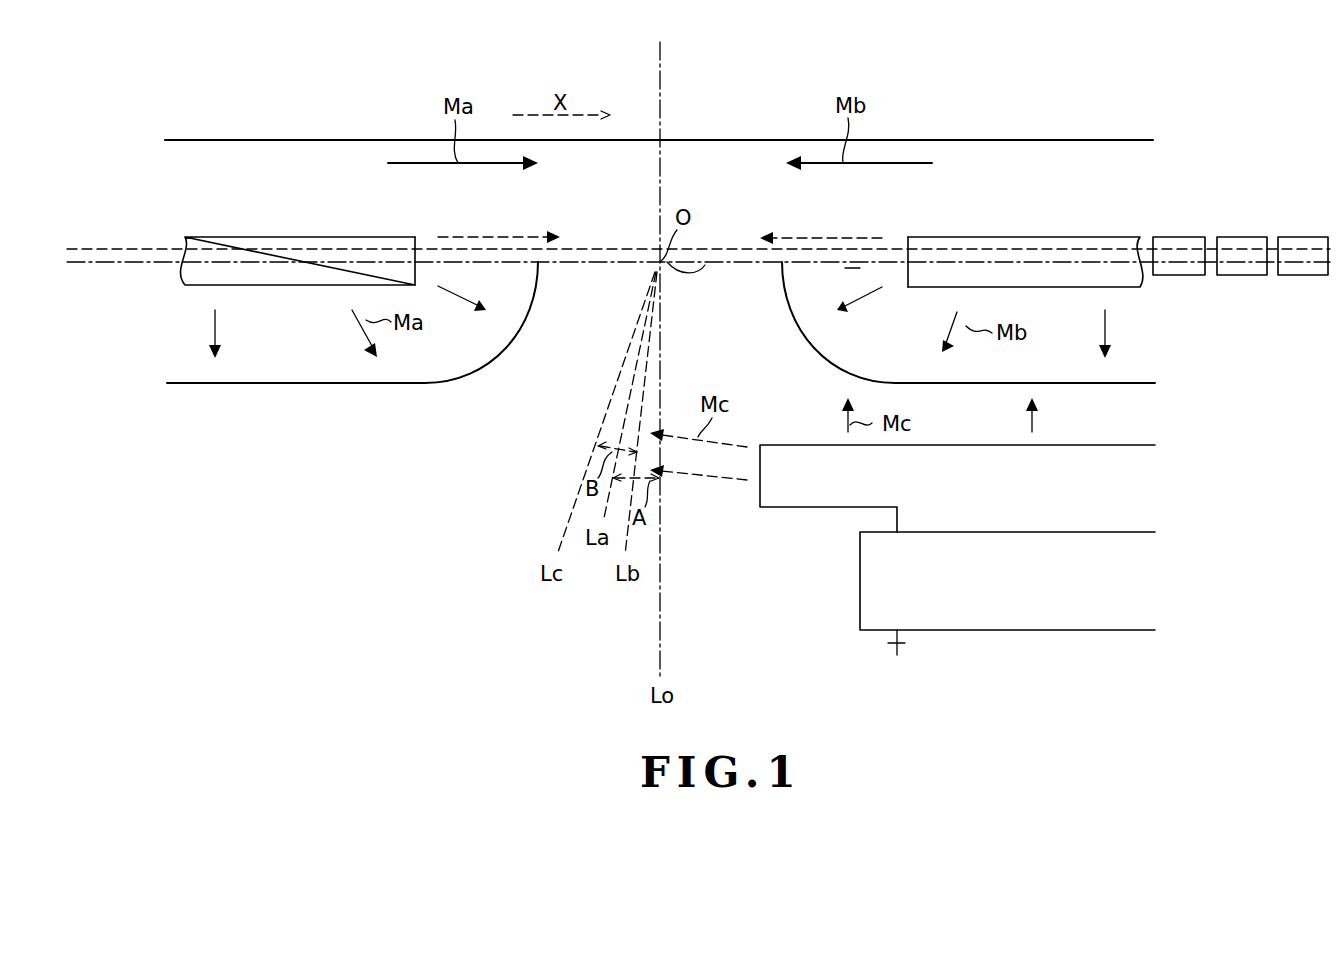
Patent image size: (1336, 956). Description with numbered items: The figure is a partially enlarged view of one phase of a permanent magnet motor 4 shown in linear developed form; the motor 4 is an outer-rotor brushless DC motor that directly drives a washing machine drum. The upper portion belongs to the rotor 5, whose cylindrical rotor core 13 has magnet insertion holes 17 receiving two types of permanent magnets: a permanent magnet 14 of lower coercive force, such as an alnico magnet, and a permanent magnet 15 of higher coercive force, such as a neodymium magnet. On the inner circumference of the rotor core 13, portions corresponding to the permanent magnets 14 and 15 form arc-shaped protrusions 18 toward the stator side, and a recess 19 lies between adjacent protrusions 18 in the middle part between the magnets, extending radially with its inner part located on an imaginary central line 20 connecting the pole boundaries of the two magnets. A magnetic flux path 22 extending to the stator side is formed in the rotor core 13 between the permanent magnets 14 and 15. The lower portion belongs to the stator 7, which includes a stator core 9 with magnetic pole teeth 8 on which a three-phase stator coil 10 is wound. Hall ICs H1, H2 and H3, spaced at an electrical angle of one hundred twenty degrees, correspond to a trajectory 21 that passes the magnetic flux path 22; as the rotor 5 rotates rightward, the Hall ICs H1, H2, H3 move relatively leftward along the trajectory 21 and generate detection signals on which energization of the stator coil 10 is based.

The permanent magnet motor 4 is at (1072, 90).
The rotor 5 is at (1137, 176).
The stator 7 is at (1180, 534).
The magnetic pole teeth 8 is at (760, 495).
The stator core 9 is at (898, 644).
The stator coil 10 is at (870, 590).
The rotor core 13 is at (781, 140).
The permanent magnet with lower coercive force 14 is at (234, 237).
The permanent magnet with higher coercive force 15 is at (942, 237).
The magnet insertion holes 17 is at (408, 252).
The protrusions 18 is at (288, 385).
The recess 19 is at (705, 265).
The central line 20 is at (852, 268).
The trajectory 21 is at (603, 249).
The magnetic flux path 22 is at (587, 262).
The Hall IC H1 is at (1180, 275).
The Hall IC H2 is at (1243, 275).
The Hall IC H3 is at (1306, 275).